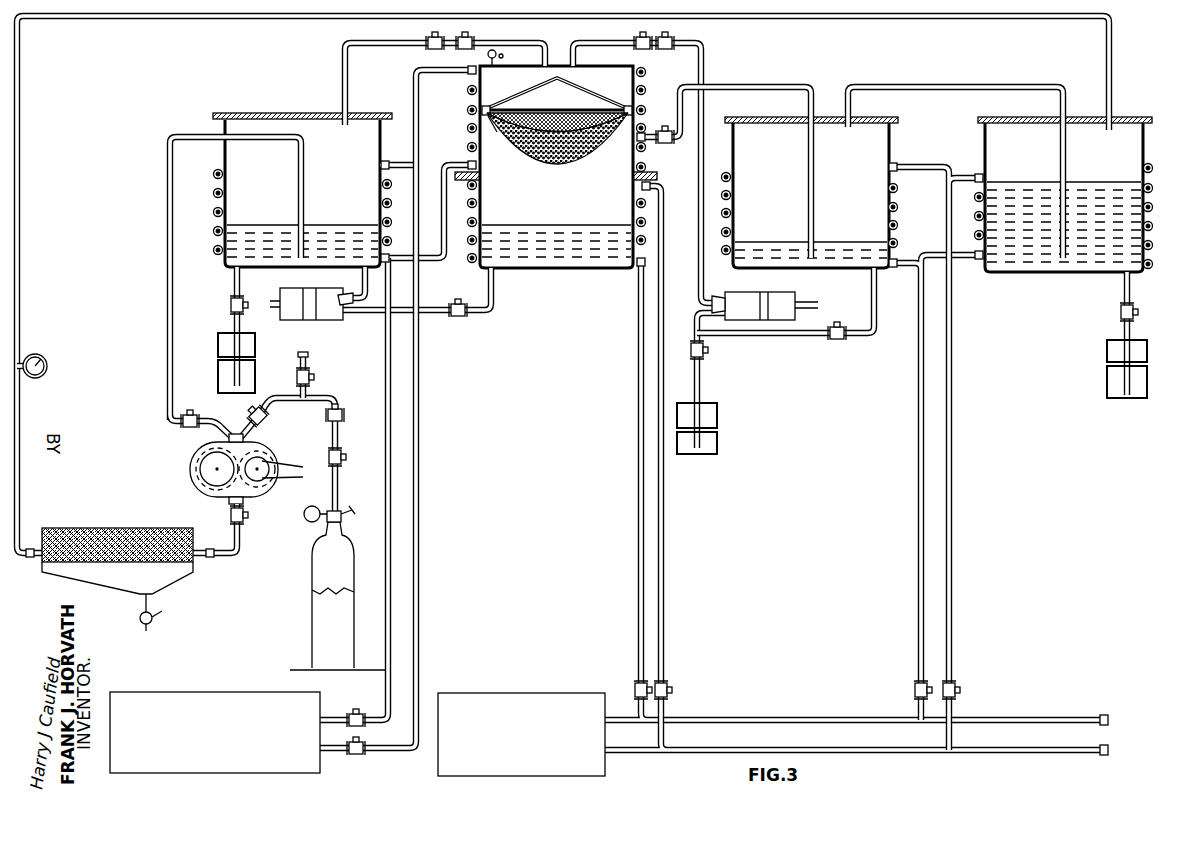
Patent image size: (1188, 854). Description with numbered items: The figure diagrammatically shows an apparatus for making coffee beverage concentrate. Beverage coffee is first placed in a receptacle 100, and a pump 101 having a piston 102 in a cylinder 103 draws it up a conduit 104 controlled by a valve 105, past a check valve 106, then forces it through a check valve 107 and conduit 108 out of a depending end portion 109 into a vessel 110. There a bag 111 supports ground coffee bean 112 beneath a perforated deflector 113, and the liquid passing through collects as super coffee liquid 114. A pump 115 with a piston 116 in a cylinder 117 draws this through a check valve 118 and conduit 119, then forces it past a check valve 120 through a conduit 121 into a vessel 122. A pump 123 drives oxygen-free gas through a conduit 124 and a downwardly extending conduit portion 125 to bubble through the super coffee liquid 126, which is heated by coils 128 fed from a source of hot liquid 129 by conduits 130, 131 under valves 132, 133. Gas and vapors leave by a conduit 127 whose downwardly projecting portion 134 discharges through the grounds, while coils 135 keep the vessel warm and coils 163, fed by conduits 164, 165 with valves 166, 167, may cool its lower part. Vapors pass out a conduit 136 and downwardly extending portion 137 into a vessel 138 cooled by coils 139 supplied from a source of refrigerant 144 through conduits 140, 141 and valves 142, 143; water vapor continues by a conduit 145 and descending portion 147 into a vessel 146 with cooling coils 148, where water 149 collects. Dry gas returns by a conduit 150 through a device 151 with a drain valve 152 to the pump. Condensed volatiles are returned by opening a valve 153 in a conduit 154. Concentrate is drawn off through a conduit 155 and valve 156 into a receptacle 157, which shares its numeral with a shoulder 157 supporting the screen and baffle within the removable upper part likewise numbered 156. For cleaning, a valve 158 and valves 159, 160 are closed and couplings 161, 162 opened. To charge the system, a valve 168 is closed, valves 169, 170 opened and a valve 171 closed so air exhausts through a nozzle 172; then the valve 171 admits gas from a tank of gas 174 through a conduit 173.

The receptacle 100 is at (719, 413).
The pump 101 is at (782, 294).
The piston 102 is at (764, 322).
The cylinder 103 is at (750, 323).
The conduit 104 is at (701, 383).
The valve 105 is at (705, 352).
The check valve 106 is at (729, 310).
The check valve 107 is at (722, 298).
The conduit 108 is at (698, 276).
The depending end portion 109 is at (575, 57).
The vessel 110 is at (633, 168).
The bag 111 is at (533, 143).
The ground coffee bean 112 is at (551, 160).
The deflector 113 is at (592, 102).
The super coffee liquid 114 is at (495, 225).
The pump 115 is at (321, 320).
The piston 116 is at (306, 320).
The cylinder 117 is at (322, 292).
The check valve 118 is at (347, 320).
The conduit 119 is at (438, 317).
The check valve 120 is at (341, 295).
The conduit 121 is at (369, 282).
The vessel 122 is at (378, 172).
The pump 123 is at (265, 449).
The conduit 124 is at (168, 358).
The downwardly extending conduit portion 125 is at (304, 210).
The super coffee liquid 126 is at (263, 240).
The conduit 127 is at (343, 72).
The coils 128 is at (213, 230).
The source of hot liquid 129 is at (215, 732).
The conduit 130 is at (420, 524).
The conduit 131 is at (392, 514).
The valve 132 is at (353, 758).
The valve 133 is at (368, 699).
The downwardly projecting portion 134 is at (504, 56).
The coils 135 is at (470, 127).
The conduit 136 is at (651, 132).
The downwardly extending portion 137 is at (814, 198).
The vessel 138 is at (735, 156).
The coils 139 is at (788, 233).
The conduit 140 is at (920, 461).
The conduit 141 is at (947, 474).
The valve 142 is at (910, 689).
The valve 143 is at (961, 689).
The source of refrigerant 144 is at (521, 734).
The conduit 145 is at (940, 91).
The vessel 146 is at (992, 158).
The descending portion 147 is at (1066, 174).
The cooling coils 148 is at (1153, 172).
The water 149 is at (1028, 260).
The conduit 150 is at (147, 19).
The device 151 is at (123, 527).
The drain valve 152 is at (138, 614).
The valve 153 is at (837, 346).
The conduit 154 is at (810, 338).
The conduit 155 is at (233, 280).
The valve 156 is at (230, 305).
The receptacle 157 is at (218, 345).
The valve 158 is at (668, 146).
The valve 159 is at (671, 40).
The valve 160 is at (431, 38).
The coupling 161 is at (640, 38).
The coupling 162 is at (469, 38).
The coils 163 is at (470, 224).
The conduit 164 is at (637, 560).
The conduit 165 is at (658, 571).
The valve 166 is at (630, 688).
The valve 167 is at (672, 689).
The valve 168 is at (190, 410).
The valve 169 is at (263, 408).
The valve 170 is at (312, 376).
The valve 171 is at (345, 415).
The nozzle 172 is at (309, 358).
The conduit 173 is at (338, 477).
The tank of gas 174 is at (322, 566).